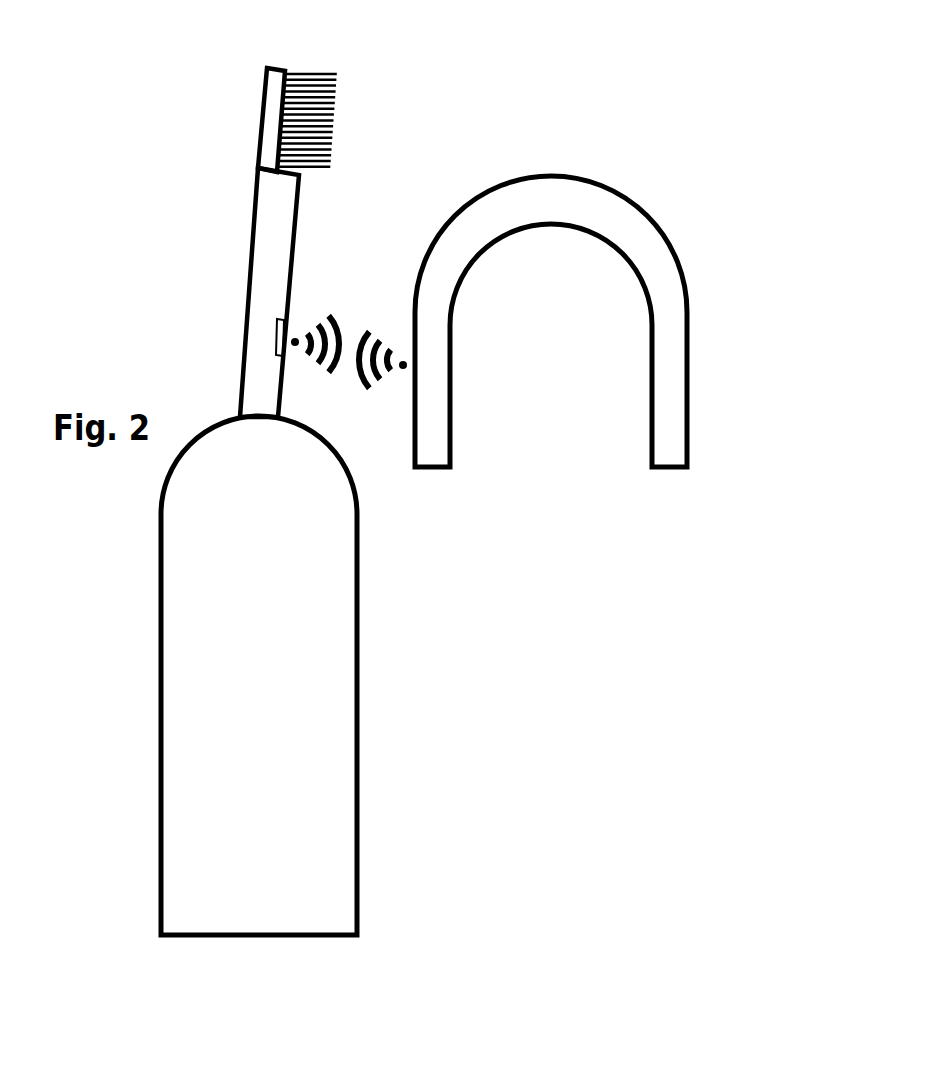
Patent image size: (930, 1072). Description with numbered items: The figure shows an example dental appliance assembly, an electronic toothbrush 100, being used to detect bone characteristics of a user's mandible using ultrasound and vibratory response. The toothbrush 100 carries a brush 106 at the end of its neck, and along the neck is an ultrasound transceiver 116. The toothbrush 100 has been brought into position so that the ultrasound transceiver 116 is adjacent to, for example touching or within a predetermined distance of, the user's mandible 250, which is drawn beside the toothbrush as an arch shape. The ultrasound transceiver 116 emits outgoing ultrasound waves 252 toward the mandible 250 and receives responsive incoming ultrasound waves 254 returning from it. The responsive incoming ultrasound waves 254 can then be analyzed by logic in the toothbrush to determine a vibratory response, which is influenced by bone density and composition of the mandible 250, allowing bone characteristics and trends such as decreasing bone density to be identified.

The electronic toothbrush 100 is at (339, 501).
The brush 106 is at (355, 136).
The ultrasound transceiver 116 is at (276, 338).
The mandible 250 is at (549, 176).
The outgoing ultrasound waves 252 is at (323, 305).
The responsive incoming ultrasound waves 254 is at (370, 402).